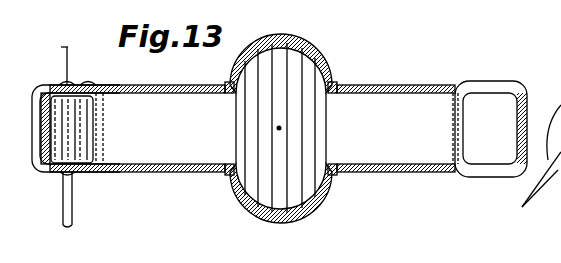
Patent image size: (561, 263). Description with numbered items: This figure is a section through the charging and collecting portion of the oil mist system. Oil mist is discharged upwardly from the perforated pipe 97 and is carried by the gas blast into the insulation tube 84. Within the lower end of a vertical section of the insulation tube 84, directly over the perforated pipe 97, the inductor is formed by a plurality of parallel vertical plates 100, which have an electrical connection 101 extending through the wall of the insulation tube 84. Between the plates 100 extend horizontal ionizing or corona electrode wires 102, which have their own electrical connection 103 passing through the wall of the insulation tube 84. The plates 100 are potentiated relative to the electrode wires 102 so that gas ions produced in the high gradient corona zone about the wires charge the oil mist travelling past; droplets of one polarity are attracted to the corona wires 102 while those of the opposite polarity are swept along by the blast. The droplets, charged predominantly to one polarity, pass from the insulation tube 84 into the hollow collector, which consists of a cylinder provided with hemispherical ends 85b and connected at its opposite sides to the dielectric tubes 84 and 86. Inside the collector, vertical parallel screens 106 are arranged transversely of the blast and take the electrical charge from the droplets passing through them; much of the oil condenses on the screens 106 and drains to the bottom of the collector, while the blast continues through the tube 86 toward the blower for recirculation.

The insulation tube 84 is at (150, 173).
The tube 86 is at (410, 86).
The hemispherical ends 85b is at (303, 50).
The screens 106 is at (272, 74).
The electrical connection 103 is at (61, 47).
The perforated pipe 97 is at (87, 85).
The ionizing or corona electrode wires 102 is at (52, 131).
The inductor plates 100 is at (91, 141).
The electrical connection 101 is at (72, 198).